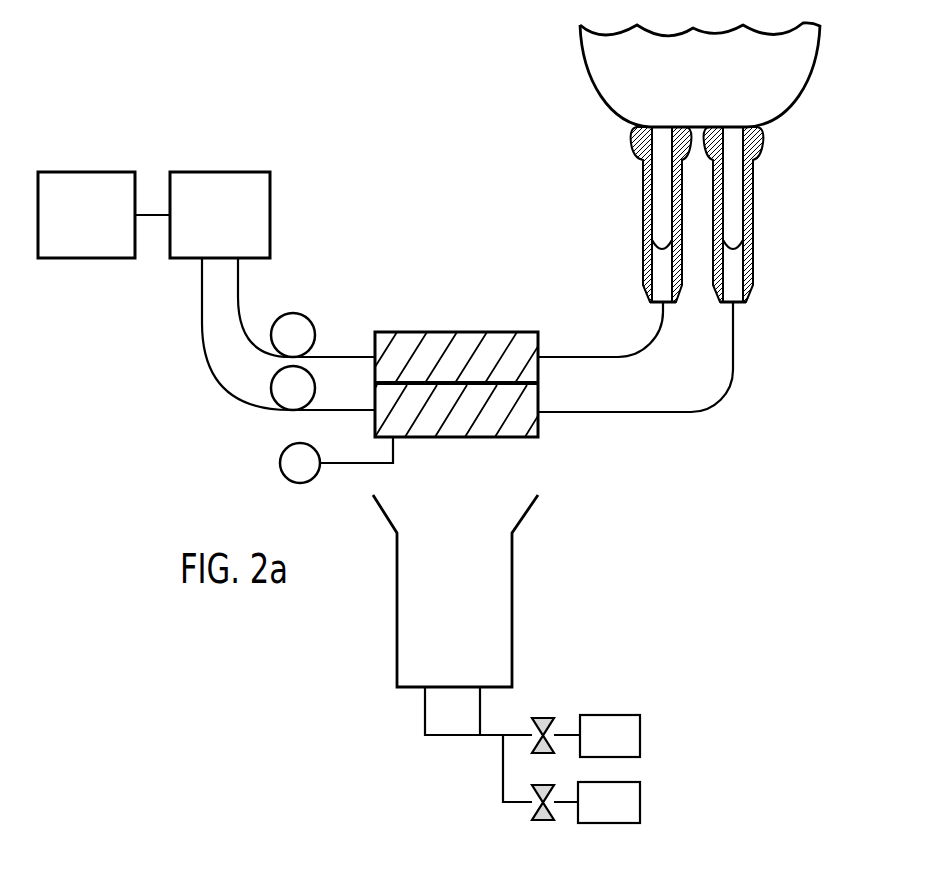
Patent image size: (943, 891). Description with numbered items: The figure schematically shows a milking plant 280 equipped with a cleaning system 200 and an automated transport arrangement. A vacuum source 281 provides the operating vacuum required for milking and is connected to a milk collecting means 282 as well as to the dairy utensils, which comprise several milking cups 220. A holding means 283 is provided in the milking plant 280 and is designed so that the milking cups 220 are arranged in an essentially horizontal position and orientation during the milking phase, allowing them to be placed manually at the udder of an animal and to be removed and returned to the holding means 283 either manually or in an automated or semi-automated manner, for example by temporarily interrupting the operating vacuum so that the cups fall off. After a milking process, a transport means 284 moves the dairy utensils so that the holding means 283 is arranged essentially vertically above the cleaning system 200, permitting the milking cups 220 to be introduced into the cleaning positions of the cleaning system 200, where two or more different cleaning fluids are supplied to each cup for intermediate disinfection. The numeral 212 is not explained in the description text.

The cleaning system 200 is at (560, 521).
The electrode assembly 212 is at (706, 180).
The milking cups 220 is at (764, 150).
The milking plant 280 is at (385, 304).
The vacuum source 281 is at (237, 231).
The milk collecting means 282 is at (105, 231).
The holding means 283 is at (460, 437).
The transport means 284 is at (232, 435).